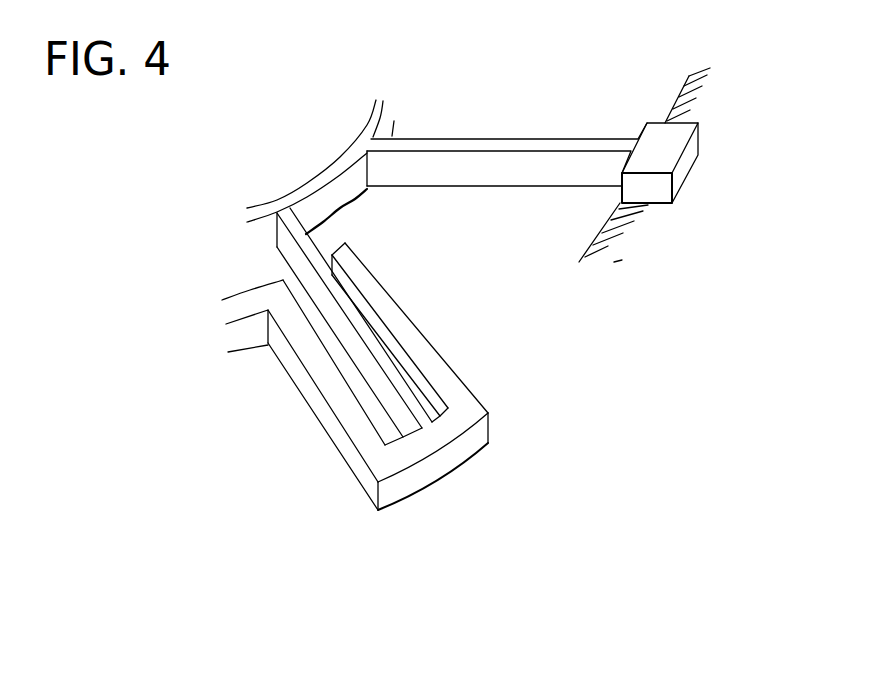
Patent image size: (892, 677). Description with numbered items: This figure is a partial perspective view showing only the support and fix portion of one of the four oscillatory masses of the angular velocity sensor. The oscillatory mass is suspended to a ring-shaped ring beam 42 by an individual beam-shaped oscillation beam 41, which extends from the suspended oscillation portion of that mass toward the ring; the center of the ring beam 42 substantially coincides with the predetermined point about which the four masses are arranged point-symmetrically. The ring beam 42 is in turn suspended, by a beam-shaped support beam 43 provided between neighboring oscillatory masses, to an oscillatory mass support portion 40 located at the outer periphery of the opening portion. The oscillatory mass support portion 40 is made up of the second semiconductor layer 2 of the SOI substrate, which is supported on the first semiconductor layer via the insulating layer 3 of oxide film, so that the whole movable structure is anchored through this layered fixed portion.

The second semiconductor layer 2 is at (689, 167).
The insulating layer 3 is at (607, 246).
The oscillatory mass support portion 40 is at (680, 137).
The oscillation beam 41 is at (315, 257).
The ring beam 42 is at (373, 123).
The support beam 43 is at (522, 139).